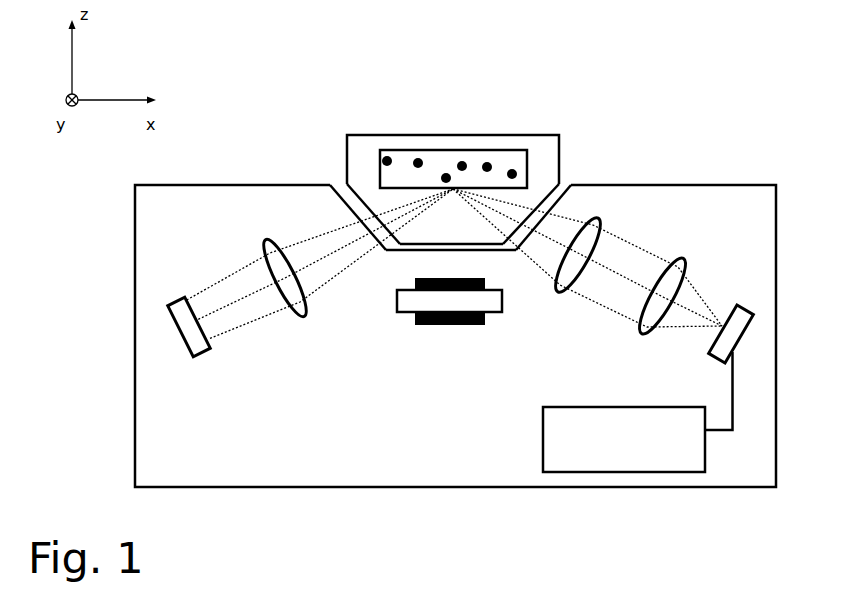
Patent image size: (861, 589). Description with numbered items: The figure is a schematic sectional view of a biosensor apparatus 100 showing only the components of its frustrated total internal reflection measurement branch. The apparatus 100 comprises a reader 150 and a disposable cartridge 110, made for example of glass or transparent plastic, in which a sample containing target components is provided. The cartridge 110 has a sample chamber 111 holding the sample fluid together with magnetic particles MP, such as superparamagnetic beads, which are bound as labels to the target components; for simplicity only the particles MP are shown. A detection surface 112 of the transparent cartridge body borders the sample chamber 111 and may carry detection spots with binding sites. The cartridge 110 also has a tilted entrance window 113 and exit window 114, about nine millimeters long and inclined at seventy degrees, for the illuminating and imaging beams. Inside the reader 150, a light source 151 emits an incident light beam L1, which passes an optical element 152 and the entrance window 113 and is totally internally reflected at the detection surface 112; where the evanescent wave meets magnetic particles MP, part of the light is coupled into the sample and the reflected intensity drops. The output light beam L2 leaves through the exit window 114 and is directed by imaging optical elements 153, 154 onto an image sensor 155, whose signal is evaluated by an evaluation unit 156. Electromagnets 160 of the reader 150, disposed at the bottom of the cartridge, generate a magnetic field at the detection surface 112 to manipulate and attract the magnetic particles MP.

The sensor apparatus 100 is at (744, 51).
The cartridge 110 is at (499, 122).
The sample chamber 111 is at (380, 158).
The detection surface 112 is at (403, 177).
The magnetic particles MP is at (461, 162).
The entrance window 113 is at (350, 197).
The exit window 114 is at (568, 197).
The reader 150 is at (727, 175).
The light source 151 is at (200, 348).
The illumination lens 152 is at (303, 308).
The imaging optical element 153 is at (558, 290).
The imaging optical element 154 is at (645, 330).
The image sensor 155 is at (742, 317).
The evaluation unit 156 is at (638, 451).
The electromagnets 160 is at (453, 327).
The incident light beam L1 is at (240, 317).
The first output light beam L2 is at (627, 267).